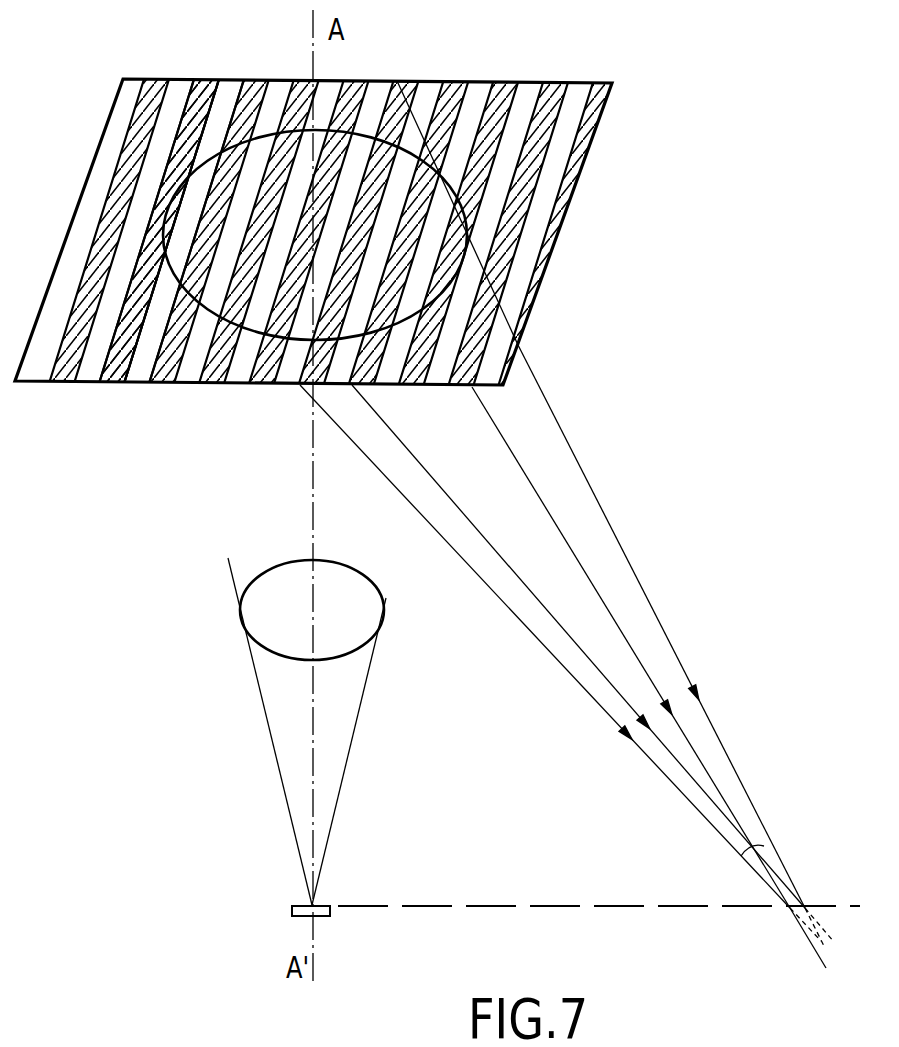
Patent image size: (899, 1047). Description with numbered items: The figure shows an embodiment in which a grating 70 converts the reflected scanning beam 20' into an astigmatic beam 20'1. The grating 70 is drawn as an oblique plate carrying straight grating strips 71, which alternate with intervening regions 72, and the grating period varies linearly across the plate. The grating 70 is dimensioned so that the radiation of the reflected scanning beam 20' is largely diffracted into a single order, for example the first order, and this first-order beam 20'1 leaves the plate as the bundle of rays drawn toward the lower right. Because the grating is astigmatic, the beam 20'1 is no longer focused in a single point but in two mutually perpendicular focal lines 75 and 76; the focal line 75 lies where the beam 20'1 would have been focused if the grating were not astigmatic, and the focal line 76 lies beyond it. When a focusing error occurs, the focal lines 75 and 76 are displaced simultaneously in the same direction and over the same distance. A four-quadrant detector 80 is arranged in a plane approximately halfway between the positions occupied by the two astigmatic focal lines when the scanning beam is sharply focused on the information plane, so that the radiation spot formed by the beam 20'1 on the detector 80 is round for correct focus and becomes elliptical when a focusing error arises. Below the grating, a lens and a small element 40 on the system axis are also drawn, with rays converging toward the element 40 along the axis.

The grating 70 is at (596, 161).
The grating strips 71 is at (217, 82).
The gap stripe 72 is at (285, 96).
The reflected scanning beam 20' is at (456, 189).
The astigmatic first-order beam 20'1 is at (552, 626).
The focal line 75 is at (758, 851).
The four-quadrant detector 80 is at (845, 906).
The focal line 76 is at (822, 947).
The detector 40 is at (324, 932).